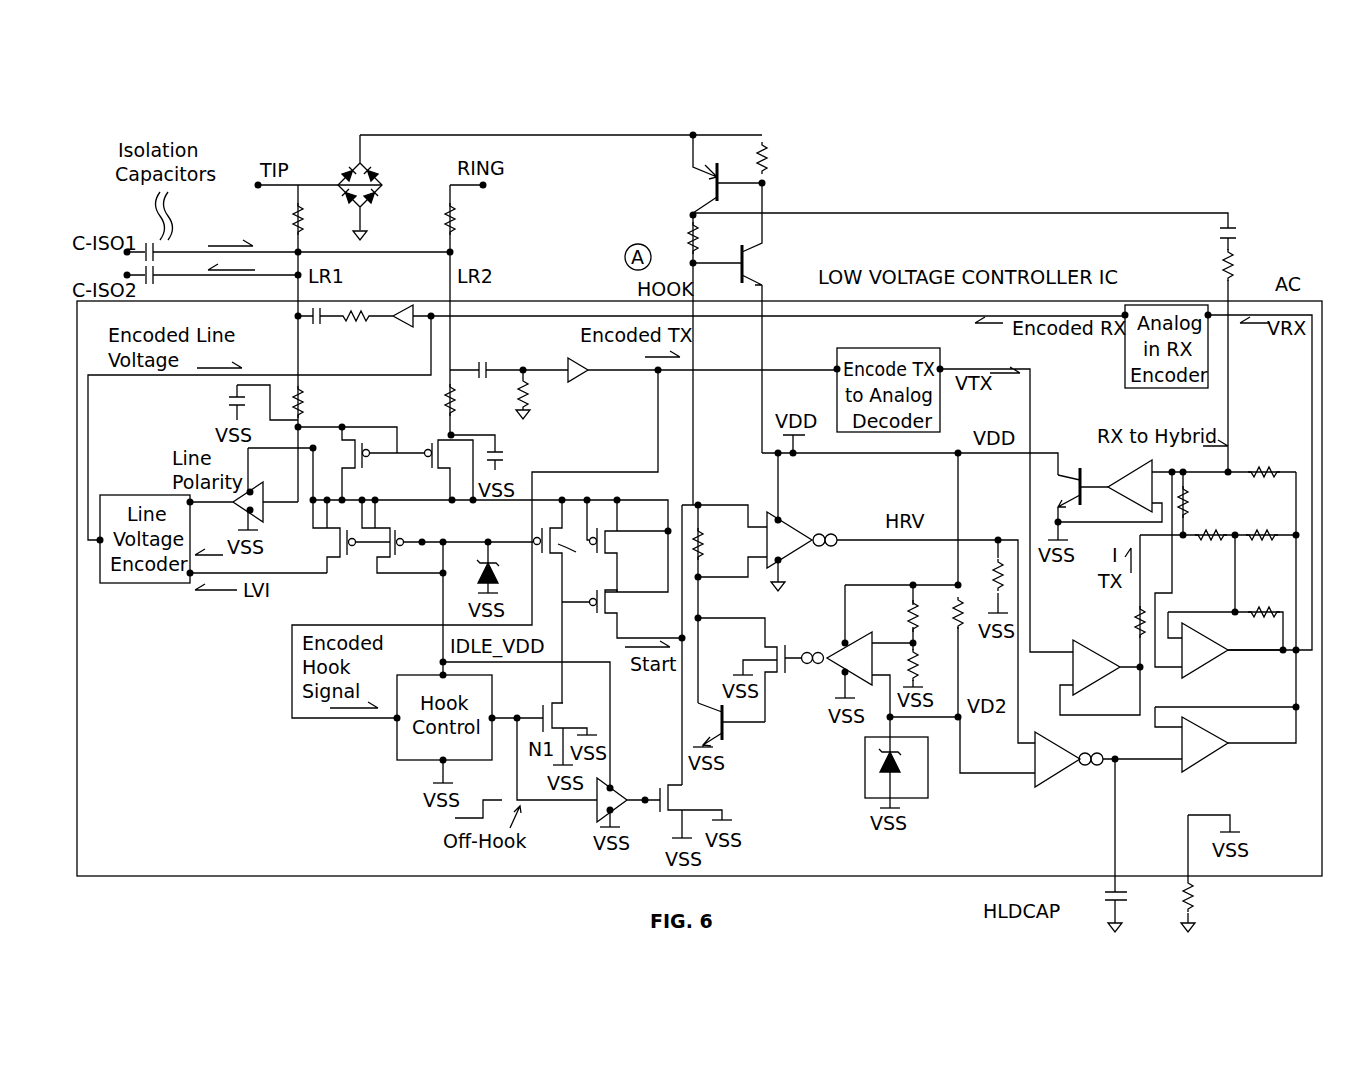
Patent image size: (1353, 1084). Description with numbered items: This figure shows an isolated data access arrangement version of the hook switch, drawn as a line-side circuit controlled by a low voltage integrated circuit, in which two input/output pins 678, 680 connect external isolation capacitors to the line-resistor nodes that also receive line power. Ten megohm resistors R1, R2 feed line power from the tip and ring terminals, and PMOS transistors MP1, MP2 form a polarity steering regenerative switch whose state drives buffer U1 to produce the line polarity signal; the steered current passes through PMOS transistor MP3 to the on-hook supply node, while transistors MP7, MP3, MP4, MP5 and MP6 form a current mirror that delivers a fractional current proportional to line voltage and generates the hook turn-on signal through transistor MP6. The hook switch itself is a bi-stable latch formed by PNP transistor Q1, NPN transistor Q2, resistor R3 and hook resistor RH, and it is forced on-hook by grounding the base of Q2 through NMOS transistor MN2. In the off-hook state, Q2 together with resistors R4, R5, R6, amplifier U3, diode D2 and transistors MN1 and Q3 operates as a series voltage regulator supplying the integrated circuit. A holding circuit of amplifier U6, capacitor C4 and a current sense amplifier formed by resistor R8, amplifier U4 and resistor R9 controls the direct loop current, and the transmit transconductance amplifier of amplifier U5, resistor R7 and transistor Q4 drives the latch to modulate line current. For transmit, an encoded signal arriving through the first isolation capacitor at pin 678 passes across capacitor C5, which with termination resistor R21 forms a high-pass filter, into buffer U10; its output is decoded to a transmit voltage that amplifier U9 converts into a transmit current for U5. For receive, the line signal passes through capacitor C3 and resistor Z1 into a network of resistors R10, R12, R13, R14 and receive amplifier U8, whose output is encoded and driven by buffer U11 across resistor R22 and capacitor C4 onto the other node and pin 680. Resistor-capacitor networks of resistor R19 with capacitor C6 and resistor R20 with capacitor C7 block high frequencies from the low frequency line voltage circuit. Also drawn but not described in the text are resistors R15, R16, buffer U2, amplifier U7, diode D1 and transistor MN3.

The I/O pin 678 is at (186, 247).
The I/O pin 680 is at (184, 279).
The resistor R1 is at (267, 219).
The resistor R2 is at (487, 219).
The resistor R3 is at (788, 159).
The impedance Z1 is at (351, 187).
The PNP transistor Q1 is at (717, 174).
The NPN transistor Q2 is at (739, 234).
The transistor Q3 is at (729, 727).
The transistor Q4 is at (1075, 495).
The capacitor C3 is at (1214, 233).
The capacitor C4 is at (319, 331).
The capacitor C5 is at (486, 358).
The capacitor C6 is at (249, 402).
The capacitor C7 is at (493, 452).
The hook resistor RH is at (674, 234).
The resistor R4 is at (899, 616).
The resistor R5 is at (945, 613).
The resistor R6 is at (928, 665).
The resistor R7 is at (1210, 903).
The resistor R8 is at (712, 544).
The resistor R9 is at (984, 572).
The resistor R10 is at (1265, 484).
The resistor R12 is at (1204, 502).
The resistor R13 is at (1211, 548).
The resistor R14 is at (1266, 548).
The resistor R15 is at (1261, 625).
The resistor R16 is at (1121, 622).
The resistor R19 is at (324, 398).
The resistor R20 is at (478, 398).
The resistor R21 is at (545, 396).
The resistor R22 is at (362, 343).
The buffer U1 is at (244, 506).
The buffer U2 is at (628, 795).
The amplifier U3 is at (837, 657).
The amplifier U4 is at (802, 522).
The amplifier U5 is at (1122, 484).
The amplifier U6 is at (1069, 757).
The amplifier U7 is at (1218, 744).
The receive amplifier U8 is at (1232, 657).
The amplifier U9 is at (1100, 677).
The buffer U10 is at (590, 363).
The buffer U11 is at (401, 332).
The zener diode D1 is at (474, 567).
The diode D2 is at (896, 772).
The PMOS transistor MP1 is at (362, 463).
The PMOS transistor MP2 is at (440, 470).
The PMOS transistor MP3 is at (447, 536).
The PMOS transistor MP4 is at (571, 601).
The PMOS transistor MP5 is at (629, 546).
The PMOS transistor MP6 is at (636, 614).
The PMOS transistor MP7 is at (339, 536).
The NMOS transistor MN1 is at (750, 670).
The NMOS transistor MN2 is at (696, 811).
The NMOS transistor MN3 is at (544, 721).